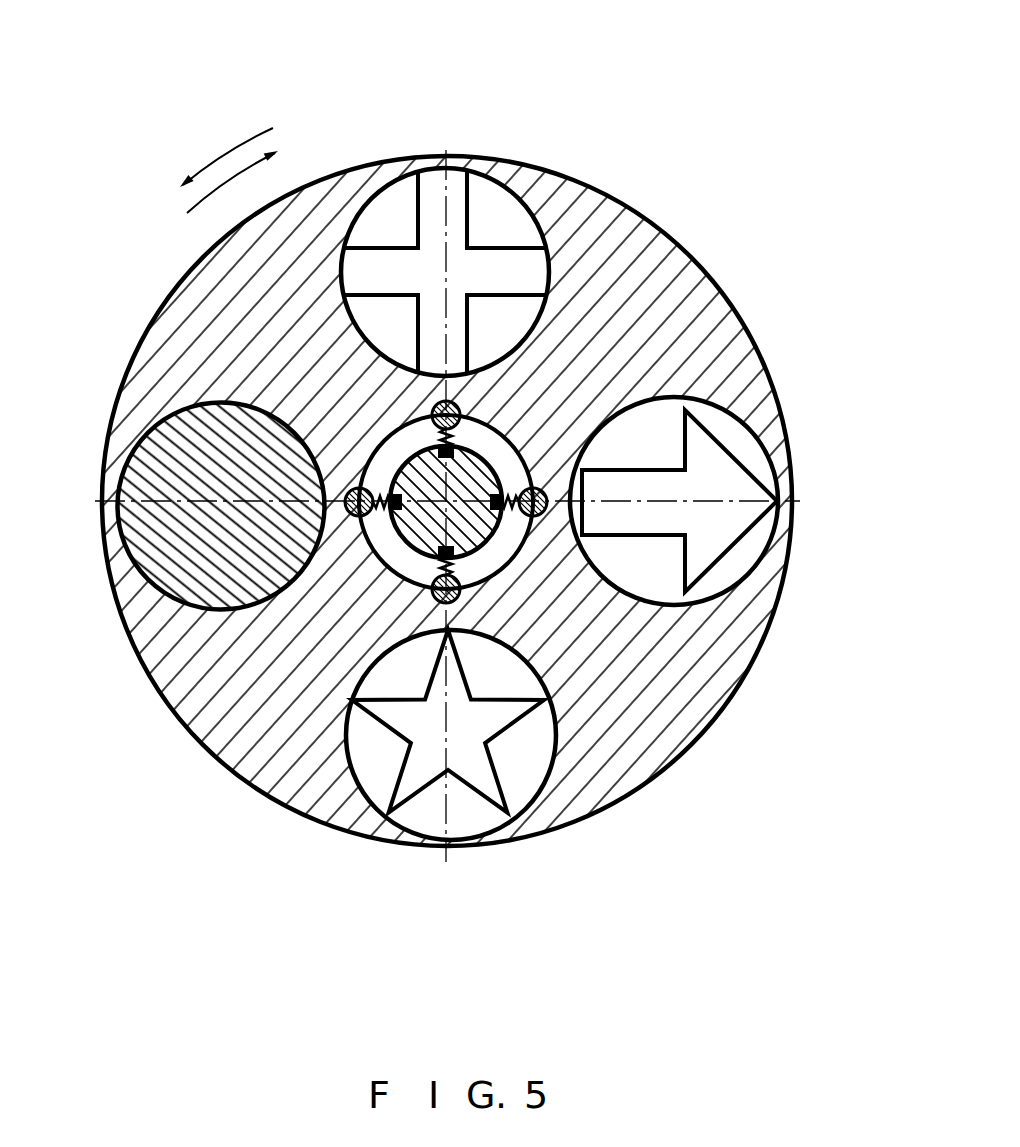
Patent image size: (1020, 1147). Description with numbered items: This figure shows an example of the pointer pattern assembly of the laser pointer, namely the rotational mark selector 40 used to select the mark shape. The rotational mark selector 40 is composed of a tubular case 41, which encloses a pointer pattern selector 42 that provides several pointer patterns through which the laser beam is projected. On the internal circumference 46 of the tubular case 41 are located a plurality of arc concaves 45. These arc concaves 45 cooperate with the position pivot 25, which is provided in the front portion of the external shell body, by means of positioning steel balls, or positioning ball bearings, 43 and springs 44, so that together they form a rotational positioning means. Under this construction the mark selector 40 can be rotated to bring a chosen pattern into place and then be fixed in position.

The rotational mark selector 40 is at (555, 102).
The tubular case 41 is at (610, 215).
The pointer pattern selector 42 is at (492, 177).
The positioning steel balls 43 is at (355, 515).
The springs 44 is at (362, 535).
The arc concaves 45 is at (662, 330).
The internal circumference 46 is at (522, 350).
The position pivot 25 is at (493, 528).